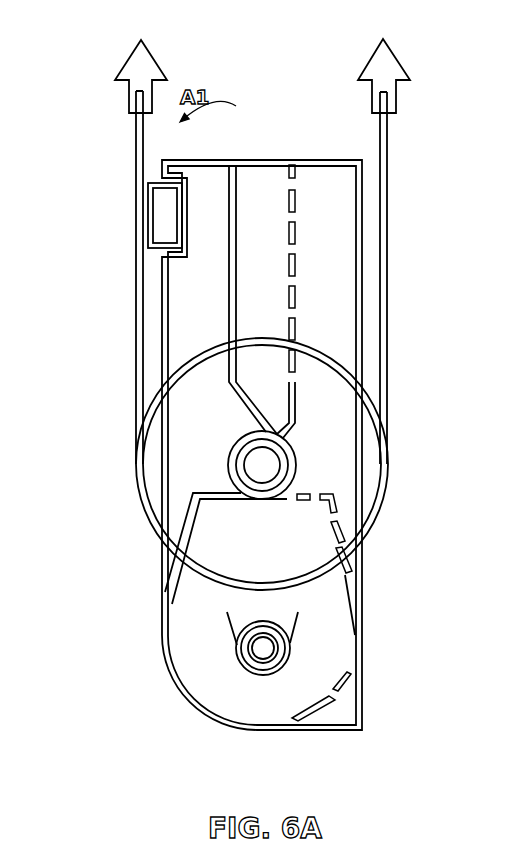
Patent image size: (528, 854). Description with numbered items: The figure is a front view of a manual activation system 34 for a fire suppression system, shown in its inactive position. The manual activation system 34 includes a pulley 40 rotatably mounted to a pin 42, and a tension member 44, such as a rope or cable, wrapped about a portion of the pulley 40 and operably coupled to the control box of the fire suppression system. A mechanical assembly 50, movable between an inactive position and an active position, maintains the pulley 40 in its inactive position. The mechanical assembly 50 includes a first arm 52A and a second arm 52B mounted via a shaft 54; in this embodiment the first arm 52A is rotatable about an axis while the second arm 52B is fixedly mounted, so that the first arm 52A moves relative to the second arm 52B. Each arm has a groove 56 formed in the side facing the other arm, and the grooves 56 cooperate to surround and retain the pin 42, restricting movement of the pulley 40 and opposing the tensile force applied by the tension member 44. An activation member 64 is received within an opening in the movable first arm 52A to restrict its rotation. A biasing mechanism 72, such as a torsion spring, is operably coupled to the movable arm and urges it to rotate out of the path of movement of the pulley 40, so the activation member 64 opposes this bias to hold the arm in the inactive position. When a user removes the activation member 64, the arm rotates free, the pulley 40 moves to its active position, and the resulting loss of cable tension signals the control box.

The manual activation system 34 is at (120, 118).
The tension member 44 is at (143, 162).
The mechanical assembly 50 is at (372, 218).
The activation member 64 is at (163, 215).
The first arm 52A is at (193, 343).
The second arm 52B is at (345, 318).
The pulley 40 is at (378, 510).
The groove 56 is at (230, 453).
The pin 42 is at (257, 464).
The shaft 54 is at (265, 648).
The biasing mechanism 72 is at (238, 652).